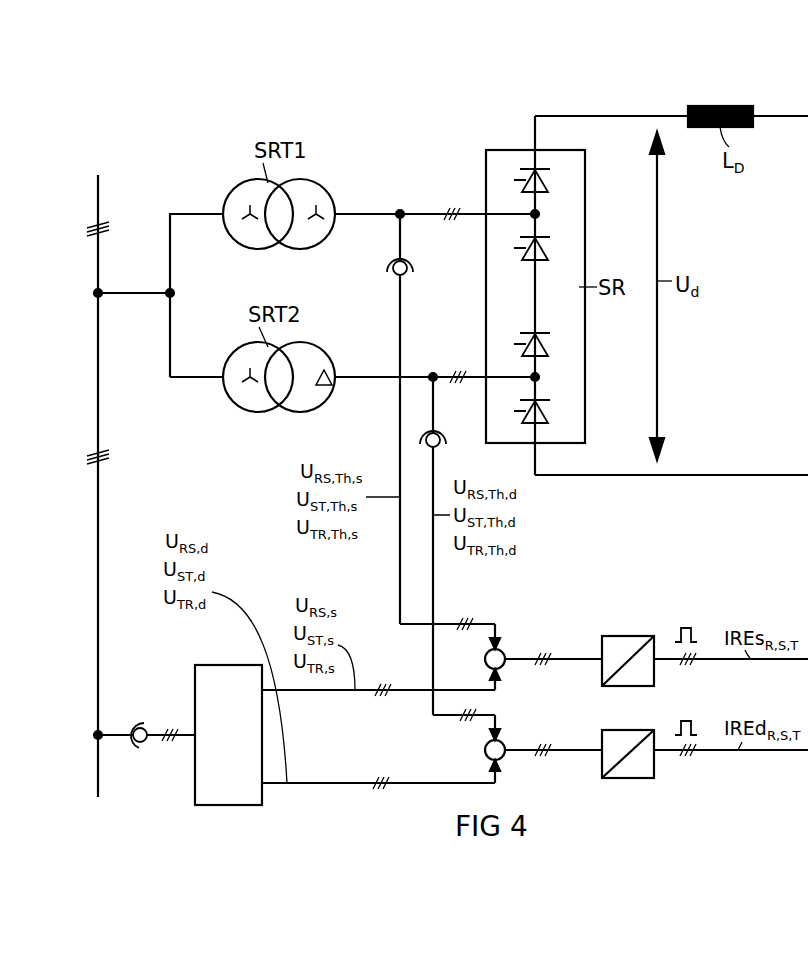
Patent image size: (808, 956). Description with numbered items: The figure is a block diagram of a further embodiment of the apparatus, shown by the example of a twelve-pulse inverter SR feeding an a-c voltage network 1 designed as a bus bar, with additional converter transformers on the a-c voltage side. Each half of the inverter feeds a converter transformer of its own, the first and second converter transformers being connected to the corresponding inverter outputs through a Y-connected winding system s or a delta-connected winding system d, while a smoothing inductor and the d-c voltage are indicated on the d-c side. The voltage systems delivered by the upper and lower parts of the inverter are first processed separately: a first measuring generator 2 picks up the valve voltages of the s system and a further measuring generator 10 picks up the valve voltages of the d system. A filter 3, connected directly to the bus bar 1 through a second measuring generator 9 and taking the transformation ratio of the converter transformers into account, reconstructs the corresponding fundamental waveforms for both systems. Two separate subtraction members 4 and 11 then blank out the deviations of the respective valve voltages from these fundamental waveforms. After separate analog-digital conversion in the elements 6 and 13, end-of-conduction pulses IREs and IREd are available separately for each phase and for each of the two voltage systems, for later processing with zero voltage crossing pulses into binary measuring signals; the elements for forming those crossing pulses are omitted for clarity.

The a-c voltage network 1 is at (95, 390).
The first measuring generator 2 is at (406, 272).
The filter 3 is at (197, 683).
The subtraction member 4 is at (485, 659).
The analog-digital converter 6 is at (628, 640).
The second measuring generator 9 is at (142, 743).
The measuring generator 10 is at (438, 435).
The subtraction member 11 is at (485, 751).
The analog-digital converter 13 is at (624, 780).